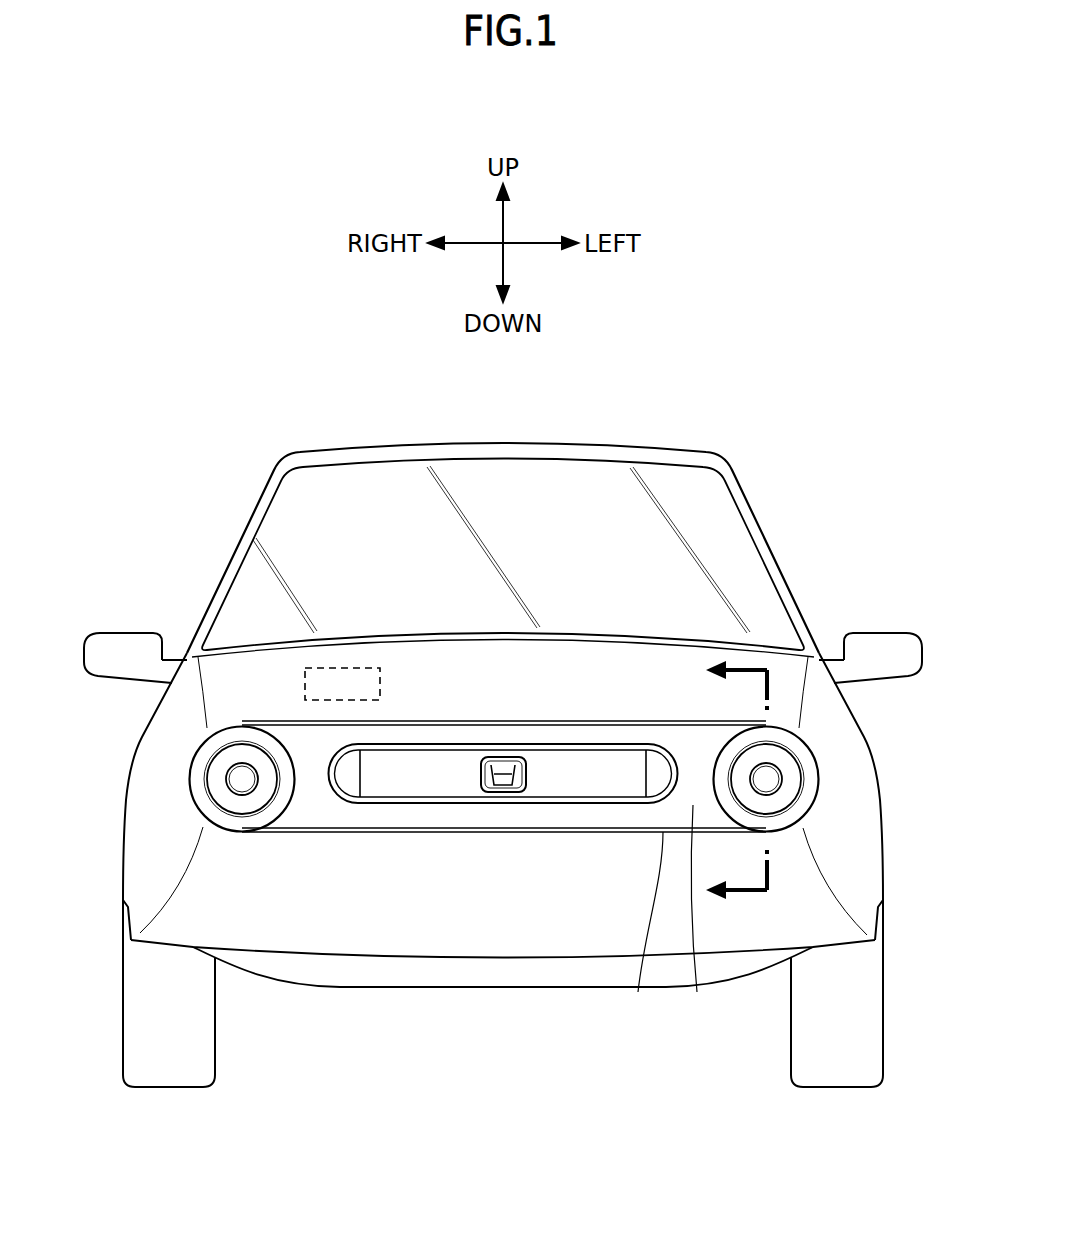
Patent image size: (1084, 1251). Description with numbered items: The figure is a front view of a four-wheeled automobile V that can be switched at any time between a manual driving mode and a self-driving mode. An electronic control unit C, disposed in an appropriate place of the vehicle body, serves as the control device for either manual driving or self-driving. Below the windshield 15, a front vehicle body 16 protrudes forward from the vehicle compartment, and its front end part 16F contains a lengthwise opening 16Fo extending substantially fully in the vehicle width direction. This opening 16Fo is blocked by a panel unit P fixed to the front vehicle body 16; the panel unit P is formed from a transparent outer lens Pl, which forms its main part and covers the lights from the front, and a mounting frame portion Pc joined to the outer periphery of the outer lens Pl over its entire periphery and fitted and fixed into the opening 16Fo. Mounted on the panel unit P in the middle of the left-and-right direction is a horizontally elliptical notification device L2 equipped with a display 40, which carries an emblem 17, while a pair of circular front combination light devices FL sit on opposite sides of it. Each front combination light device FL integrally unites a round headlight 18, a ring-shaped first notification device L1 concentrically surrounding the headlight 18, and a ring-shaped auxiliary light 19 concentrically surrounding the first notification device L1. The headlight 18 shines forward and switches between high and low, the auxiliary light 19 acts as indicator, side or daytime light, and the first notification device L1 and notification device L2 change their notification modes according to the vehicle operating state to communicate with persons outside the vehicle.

The four-wheeled automobile V is at (328, 408).
The windshield 15 is at (538, 555).
The front vehicle body 16 is at (668, 652).
The front end part 16F is at (525, 895).
The lengthwise opening 16Fo is at (357, 830).
The emblem 17 is at (530, 775).
The headlight 18 is at (240, 779).
The first notification device L1 is at (216, 778).
The auxiliary light 19 is at (210, 803).
The front combination light device FL is at (90, 705).
The display 40 is at (420, 784).
The notification device L2 is at (458, 735).
The electronic control unit C is at (345, 668).
The panel unit P is at (718, 1019).
The mounting frame portion Pc is at (644, 930).
The outer lens Pl is at (694, 916).